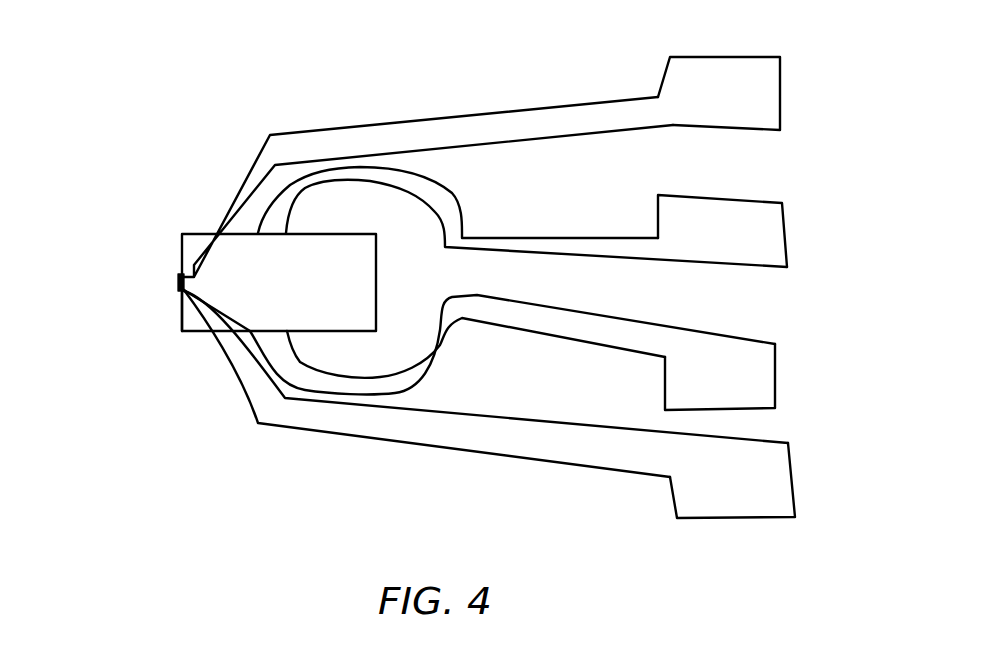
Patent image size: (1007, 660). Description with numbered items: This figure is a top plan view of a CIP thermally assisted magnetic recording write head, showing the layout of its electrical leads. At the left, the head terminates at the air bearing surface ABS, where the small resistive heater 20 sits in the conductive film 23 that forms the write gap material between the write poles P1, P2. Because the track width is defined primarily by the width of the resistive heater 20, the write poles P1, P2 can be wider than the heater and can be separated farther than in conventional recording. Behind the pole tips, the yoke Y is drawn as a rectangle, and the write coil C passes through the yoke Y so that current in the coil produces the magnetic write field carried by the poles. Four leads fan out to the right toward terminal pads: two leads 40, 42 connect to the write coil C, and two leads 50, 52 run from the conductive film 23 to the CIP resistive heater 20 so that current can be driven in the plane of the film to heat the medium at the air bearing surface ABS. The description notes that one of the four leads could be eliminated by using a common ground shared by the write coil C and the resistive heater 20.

The resistive heater 20 is at (180, 280).
The conductive film 23 is at (451, 270).
The lead 40 is at (742, 230).
The lead 42 is at (748, 362).
The lead 50 is at (738, 96).
The lead 52 is at (770, 485).
The write coil C is at (298, 192).
The yoke Y is at (343, 257).
The write pole P1 is at (192, 330).
The write pole P2 is at (192, 263).
The air bearing surface ABS is at (182, 308).